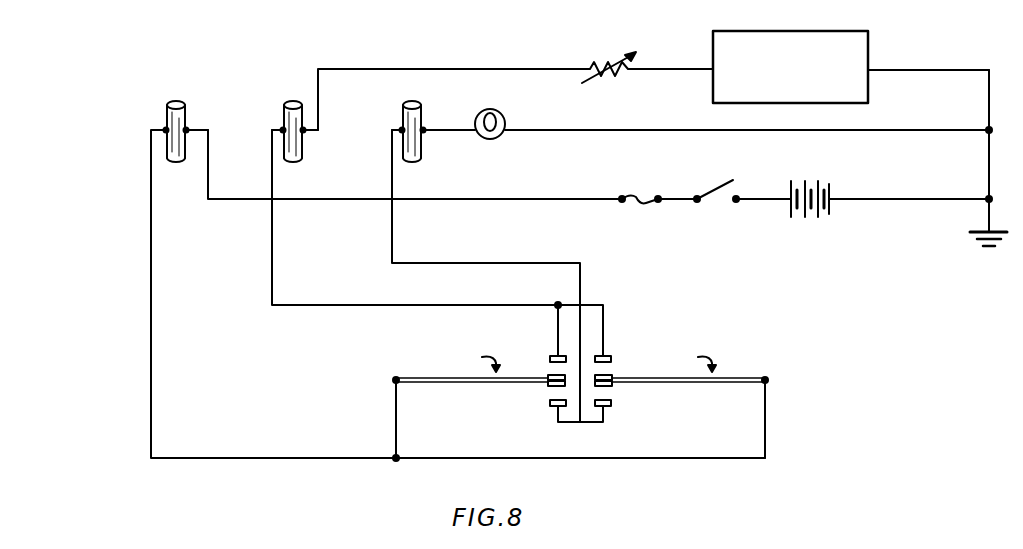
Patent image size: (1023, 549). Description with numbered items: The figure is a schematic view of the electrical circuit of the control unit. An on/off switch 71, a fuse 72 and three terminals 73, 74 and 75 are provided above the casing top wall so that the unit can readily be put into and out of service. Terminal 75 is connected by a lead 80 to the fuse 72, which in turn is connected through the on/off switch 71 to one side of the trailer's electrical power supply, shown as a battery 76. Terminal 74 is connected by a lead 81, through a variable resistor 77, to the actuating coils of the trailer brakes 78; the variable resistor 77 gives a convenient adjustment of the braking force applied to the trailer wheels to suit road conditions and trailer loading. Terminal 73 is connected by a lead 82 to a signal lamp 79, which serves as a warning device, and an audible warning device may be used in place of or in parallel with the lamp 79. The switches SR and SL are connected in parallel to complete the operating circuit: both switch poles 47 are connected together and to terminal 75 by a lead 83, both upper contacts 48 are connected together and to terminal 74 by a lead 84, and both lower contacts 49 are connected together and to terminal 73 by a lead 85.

The switch pole 47 is at (442, 382).
The upper contact 48 is at (550, 356).
The lower contact 49 is at (550, 403).
The on/off switch 71 is at (713, 186).
The fuse 72 is at (638, 195).
The terminal 73 is at (402, 102).
The terminal 74 is at (280, 98).
The terminal 75 is at (171, 98).
The battery 76 is at (817, 180).
The variable resistor 77 is at (609, 56).
The trailer brakes 78 is at (818, 31).
The signal lamp 79 is at (506, 118).
The lead 80 is at (315, 199).
The lead 81 is at (336, 68).
The lead 82 is at (436, 128).
The lead 83 is at (151, 297).
The lead 84 is at (311, 305).
The lead 85 is at (582, 287).